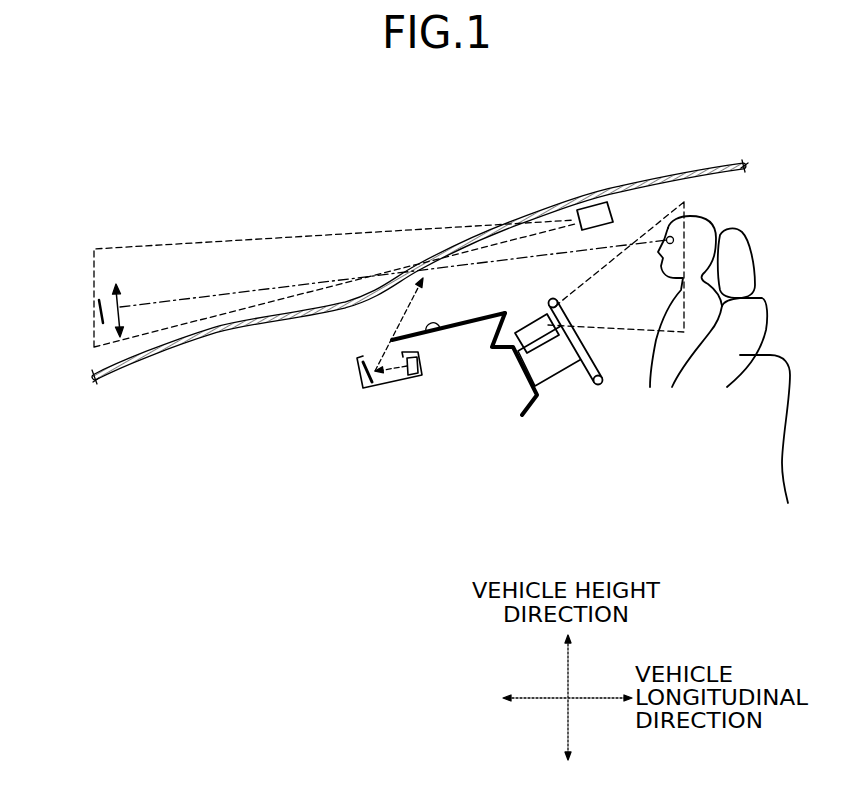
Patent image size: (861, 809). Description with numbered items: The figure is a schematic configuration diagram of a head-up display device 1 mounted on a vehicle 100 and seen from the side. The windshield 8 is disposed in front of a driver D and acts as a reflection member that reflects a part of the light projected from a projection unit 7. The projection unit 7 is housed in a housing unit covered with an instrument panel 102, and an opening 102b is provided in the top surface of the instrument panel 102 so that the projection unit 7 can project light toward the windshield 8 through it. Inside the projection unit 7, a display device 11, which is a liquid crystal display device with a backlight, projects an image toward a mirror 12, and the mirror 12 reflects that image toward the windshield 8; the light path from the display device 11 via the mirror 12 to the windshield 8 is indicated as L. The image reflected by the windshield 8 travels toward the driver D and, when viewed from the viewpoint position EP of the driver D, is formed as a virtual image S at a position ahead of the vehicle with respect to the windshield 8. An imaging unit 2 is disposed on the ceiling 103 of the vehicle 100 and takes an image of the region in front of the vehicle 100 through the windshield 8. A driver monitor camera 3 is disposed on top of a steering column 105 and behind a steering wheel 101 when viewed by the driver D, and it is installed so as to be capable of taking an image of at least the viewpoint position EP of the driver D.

The head-up display device 1 is at (552, 114).
The imaging unit 2 is at (593, 206).
The driver monitor camera 3 is at (519, 330).
The projection unit 7 is at (390, 324).
The windshield 8 is at (470, 242).
The display device 11 is at (410, 380).
The mirror 12 is at (362, 389).
The vehicle 100 is at (232, 176).
The steering wheel 101 is at (591, 378).
The instrument panel 102 is at (430, 340).
The opening 102b is at (367, 340).
The ceiling 103 is at (625, 187).
The steering column 105 is at (560, 358).
The display light L is at (381, 378).
The viewpoint position EP is at (668, 236).
The driver D is at (720, 310).
The virtual image S is at (100, 317).